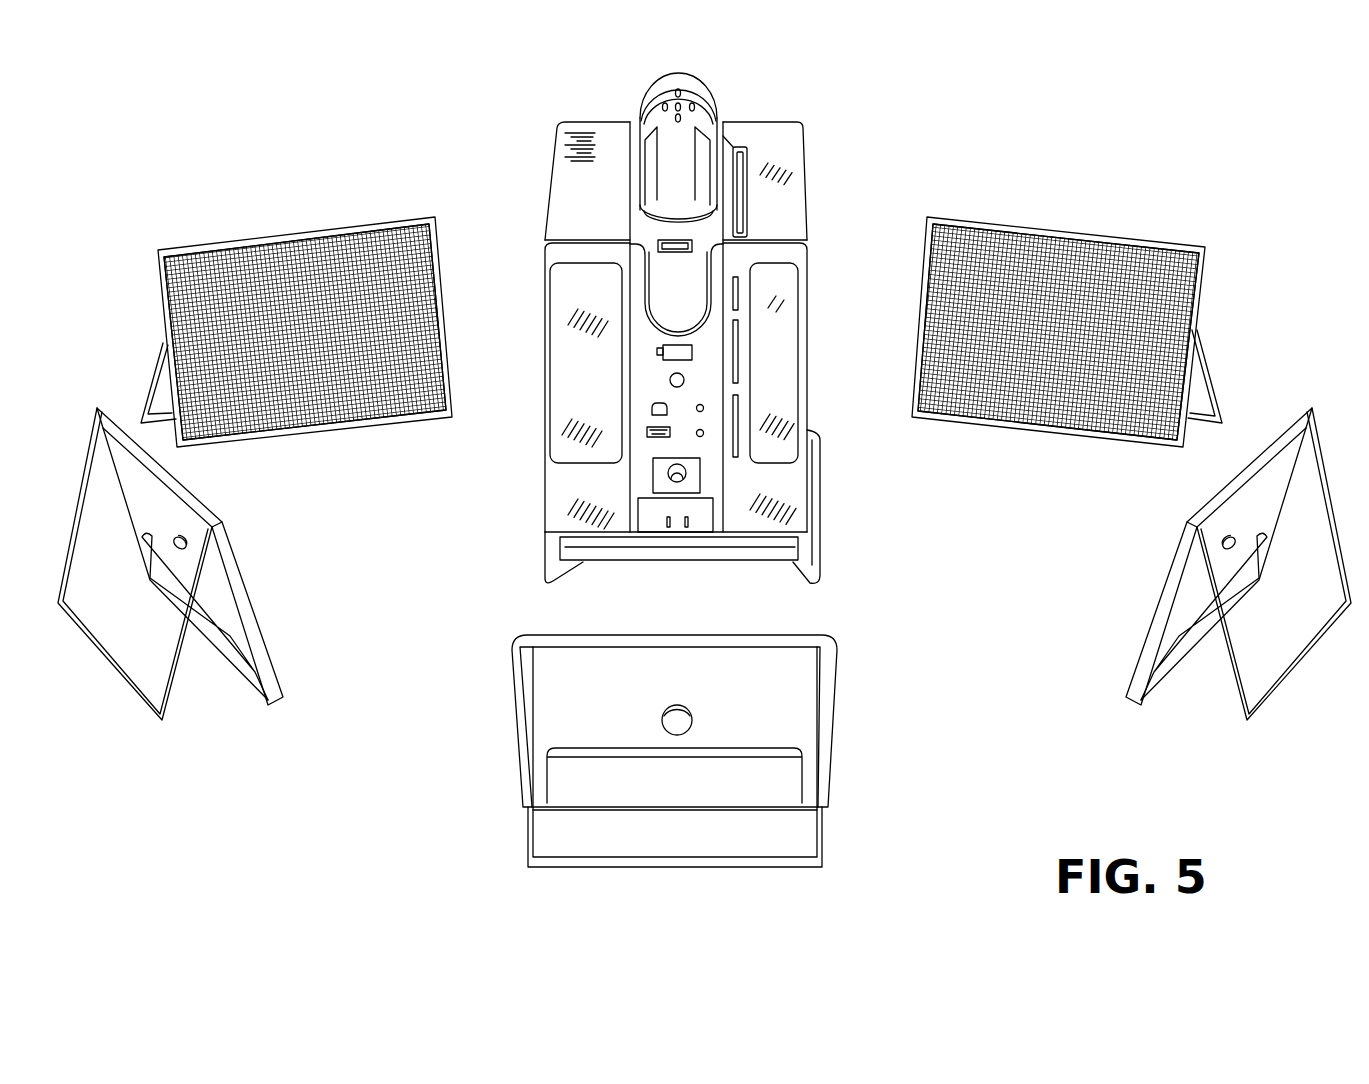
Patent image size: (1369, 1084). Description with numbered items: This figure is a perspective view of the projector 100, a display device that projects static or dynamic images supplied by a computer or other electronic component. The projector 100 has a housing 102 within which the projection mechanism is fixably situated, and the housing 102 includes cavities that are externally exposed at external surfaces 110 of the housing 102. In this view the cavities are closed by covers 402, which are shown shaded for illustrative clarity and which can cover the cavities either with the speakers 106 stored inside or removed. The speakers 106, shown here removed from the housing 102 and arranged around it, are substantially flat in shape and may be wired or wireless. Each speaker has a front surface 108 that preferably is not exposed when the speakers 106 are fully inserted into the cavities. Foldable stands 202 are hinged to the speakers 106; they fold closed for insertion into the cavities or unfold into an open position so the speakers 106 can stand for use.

The projector 100 is at (292, 796).
The housing 102 is at (570, 128).
The speakers 106 is at (166, 250).
The front surfaces 108 is at (347, 245).
The external surfaces 110 is at (793, 508).
The foldable stands 202 is at (143, 385).
The covers 402 is at (562, 413).